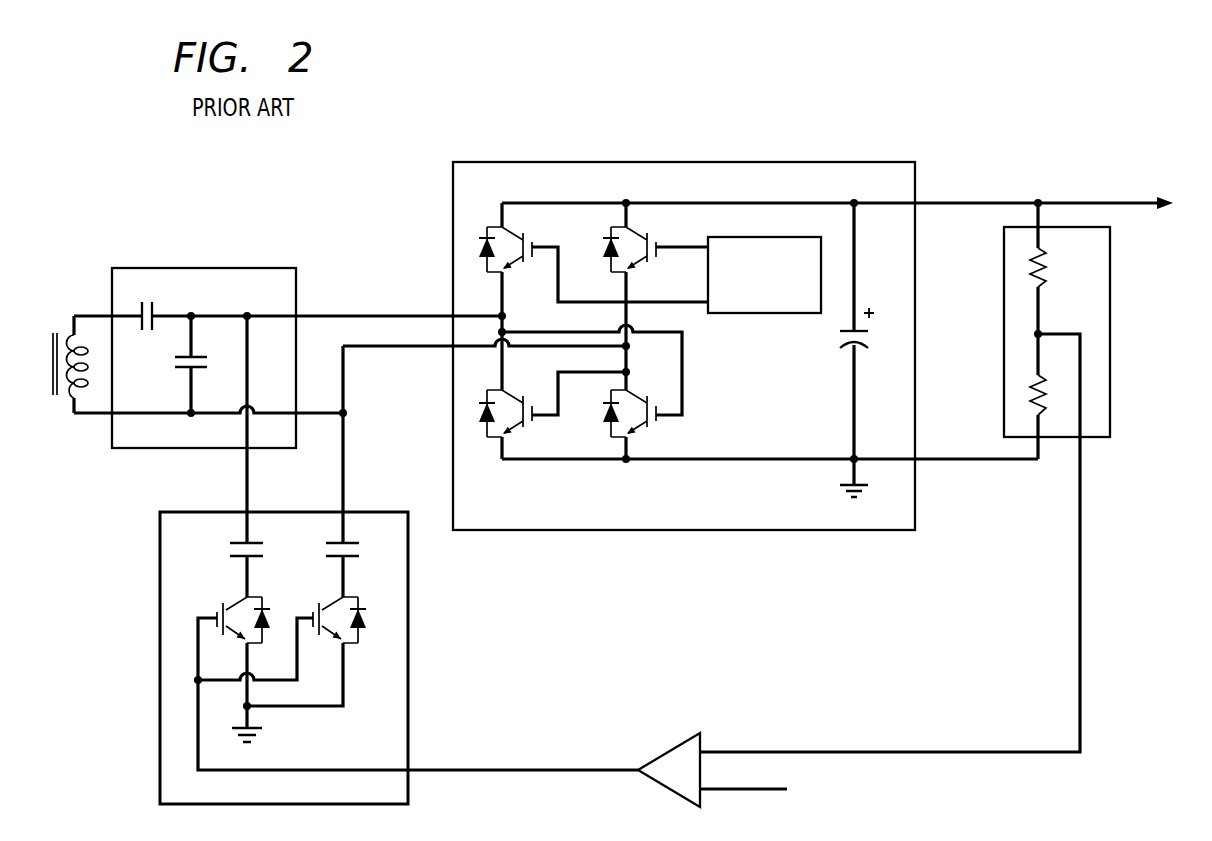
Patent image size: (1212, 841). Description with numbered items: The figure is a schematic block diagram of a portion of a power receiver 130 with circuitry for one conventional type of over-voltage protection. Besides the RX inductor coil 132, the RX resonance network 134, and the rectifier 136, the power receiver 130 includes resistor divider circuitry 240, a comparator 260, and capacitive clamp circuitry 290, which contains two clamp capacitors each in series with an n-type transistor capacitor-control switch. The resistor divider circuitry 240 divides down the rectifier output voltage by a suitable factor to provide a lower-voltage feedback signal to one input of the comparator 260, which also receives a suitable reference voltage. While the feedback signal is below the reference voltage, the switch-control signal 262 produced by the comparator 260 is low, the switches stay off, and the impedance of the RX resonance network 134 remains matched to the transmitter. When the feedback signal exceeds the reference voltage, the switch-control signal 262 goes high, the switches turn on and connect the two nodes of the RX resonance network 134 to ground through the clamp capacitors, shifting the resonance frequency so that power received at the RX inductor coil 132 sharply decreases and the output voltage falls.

The power receiver 130 is at (258, 167).
The RX inductor coil 132 is at (58, 403).
The RX resonance network 134 is at (230, 268).
The rectifier 136 is at (826, 162).
The resistor divider circuitry 240 is at (1110, 322).
The comparator 260 is at (673, 744).
The switch-control signal 262 is at (512, 768).
The capacitive clamp circuitry 290 is at (160, 543).